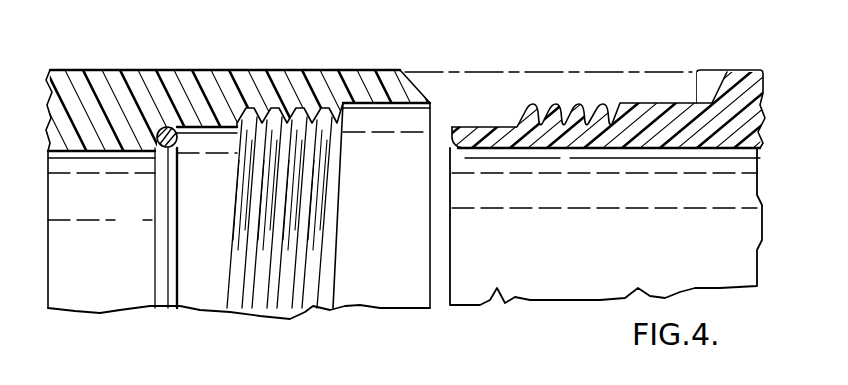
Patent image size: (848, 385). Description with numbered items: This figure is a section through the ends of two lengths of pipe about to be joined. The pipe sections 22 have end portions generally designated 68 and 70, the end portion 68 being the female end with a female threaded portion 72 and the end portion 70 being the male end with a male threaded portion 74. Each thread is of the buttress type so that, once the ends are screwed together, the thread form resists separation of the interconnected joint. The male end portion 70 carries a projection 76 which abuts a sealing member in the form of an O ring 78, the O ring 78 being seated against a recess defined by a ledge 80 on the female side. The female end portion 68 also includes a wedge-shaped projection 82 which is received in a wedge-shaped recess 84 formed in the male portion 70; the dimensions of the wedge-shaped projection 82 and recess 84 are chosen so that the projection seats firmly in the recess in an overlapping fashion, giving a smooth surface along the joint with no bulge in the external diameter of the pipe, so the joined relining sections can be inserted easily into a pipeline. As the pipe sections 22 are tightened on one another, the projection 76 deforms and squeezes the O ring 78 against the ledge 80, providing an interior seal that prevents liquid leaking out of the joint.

The pipe sections 22 is at (108, 88).
The end portion 68 is at (294, 68).
The end portion 70 is at (556, 70).
The female threaded portion 72 is at (303, 318).
The male threaded portion 74 is at (577, 128).
The projection 76 is at (450, 127).
The O ring 78 is at (157, 172).
The ledge 80 is at (157, 140).
The wedge-shaped projection 82 is at (434, 100).
The wedge-shaped recess 84 is at (697, 90).